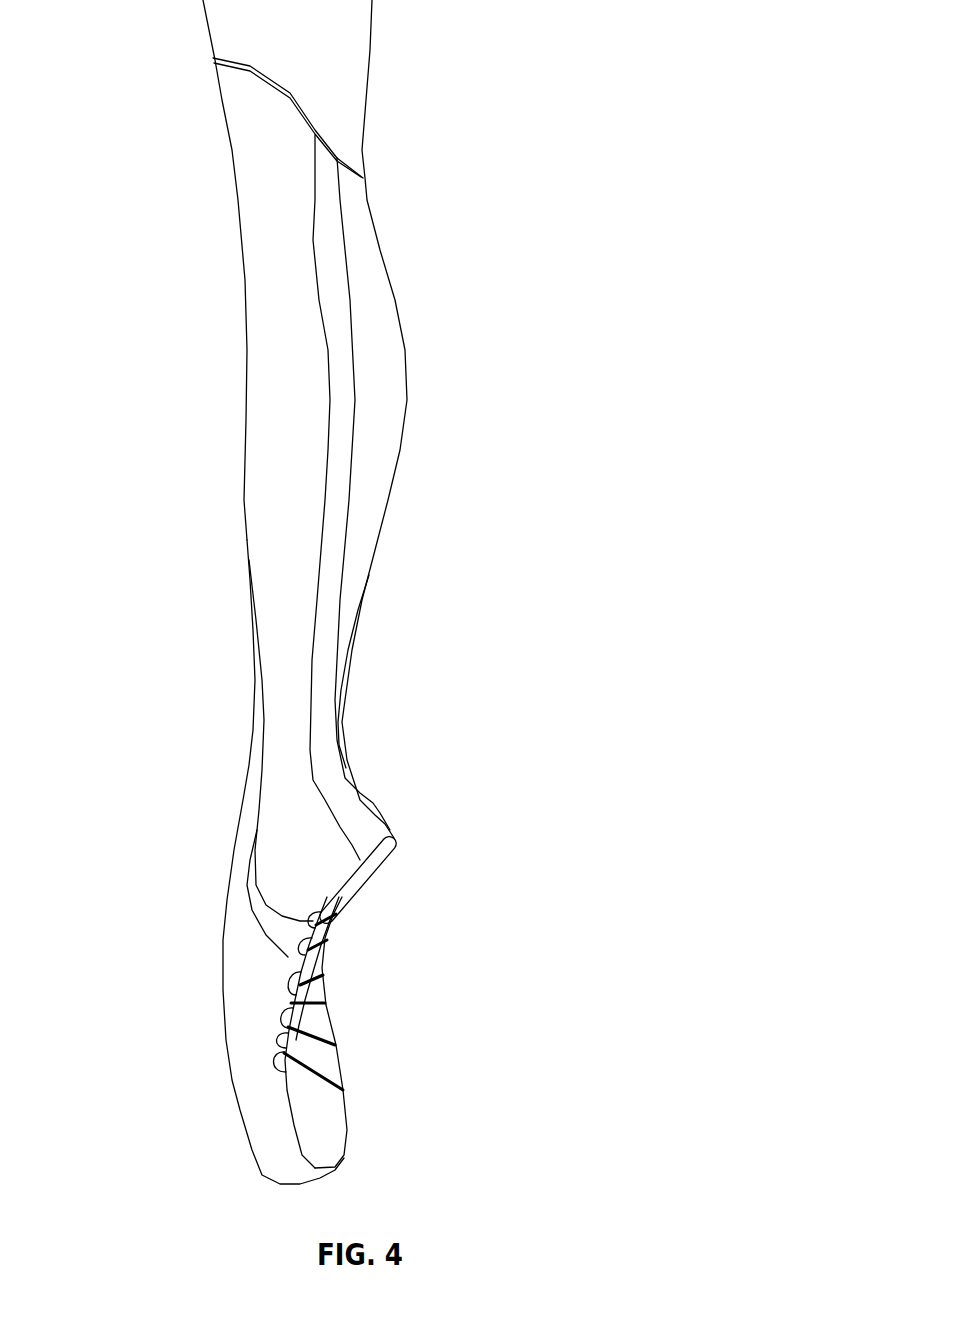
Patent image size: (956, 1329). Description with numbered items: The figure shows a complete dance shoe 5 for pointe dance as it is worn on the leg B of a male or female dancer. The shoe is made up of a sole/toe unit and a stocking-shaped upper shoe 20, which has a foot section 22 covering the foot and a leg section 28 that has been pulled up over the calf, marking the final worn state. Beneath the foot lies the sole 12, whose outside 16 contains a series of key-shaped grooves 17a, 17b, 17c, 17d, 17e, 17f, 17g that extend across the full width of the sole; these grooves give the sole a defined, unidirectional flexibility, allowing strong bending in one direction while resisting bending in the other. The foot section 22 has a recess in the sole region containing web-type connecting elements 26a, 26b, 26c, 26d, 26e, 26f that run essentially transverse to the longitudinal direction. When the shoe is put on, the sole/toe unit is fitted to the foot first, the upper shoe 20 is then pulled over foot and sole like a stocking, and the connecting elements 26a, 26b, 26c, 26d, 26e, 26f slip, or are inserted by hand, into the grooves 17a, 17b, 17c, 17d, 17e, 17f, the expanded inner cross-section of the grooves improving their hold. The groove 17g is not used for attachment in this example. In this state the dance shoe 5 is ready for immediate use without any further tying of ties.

The leg B is at (330, 40).
The leg section 28 is at (277, 477).
The upper shoe 20 is at (292, 828).
The sole 12 is at (303, 958).
The dance shoe 5 is at (182, 953).
The foot section 22 is at (240, 1008).
The outside 16 is at (318, 1117).
The groove 17a is at (318, 1070).
The groove 17b is at (300, 1030).
The groove 17c is at (317, 1003).
The groove 17d is at (290, 978).
The groove 17e is at (327, 947).
The groove 17f is at (313, 930).
The groove 17g is at (333, 913).
The connecting element 26a is at (206, 1108).
The connecting element 26b is at (421, 1072).
The connecting element 26c is at (419, 1038).
The connecting element 26d is at (492, 1015).
The connecting element 26e is at (479, 976).
The connecting element 26f is at (450, 937).